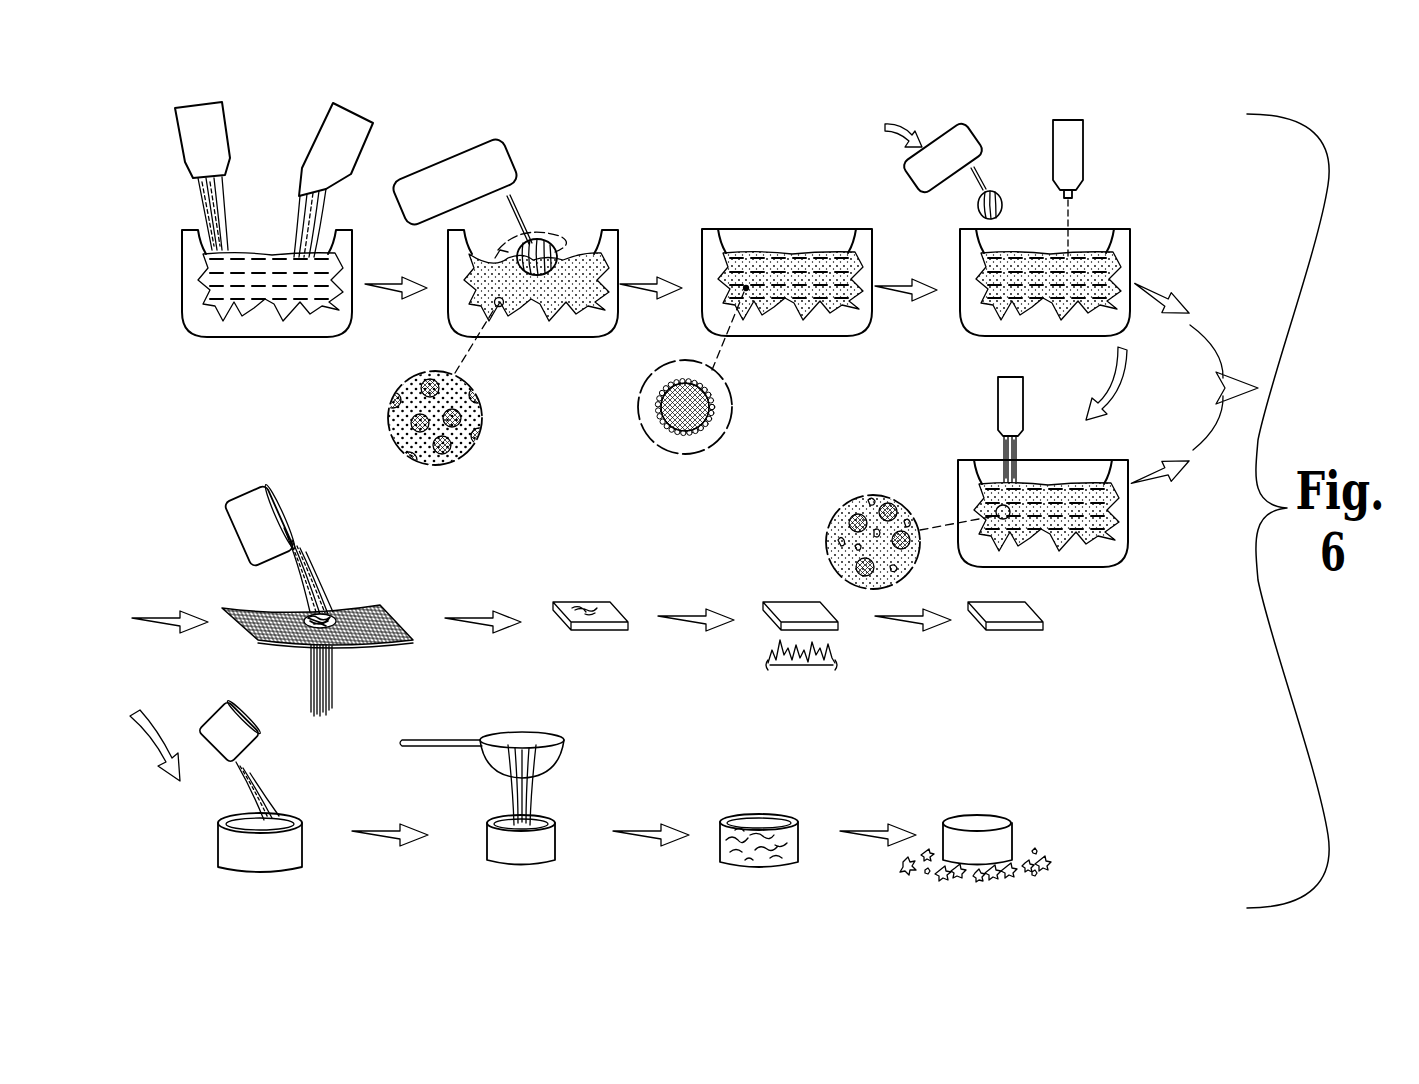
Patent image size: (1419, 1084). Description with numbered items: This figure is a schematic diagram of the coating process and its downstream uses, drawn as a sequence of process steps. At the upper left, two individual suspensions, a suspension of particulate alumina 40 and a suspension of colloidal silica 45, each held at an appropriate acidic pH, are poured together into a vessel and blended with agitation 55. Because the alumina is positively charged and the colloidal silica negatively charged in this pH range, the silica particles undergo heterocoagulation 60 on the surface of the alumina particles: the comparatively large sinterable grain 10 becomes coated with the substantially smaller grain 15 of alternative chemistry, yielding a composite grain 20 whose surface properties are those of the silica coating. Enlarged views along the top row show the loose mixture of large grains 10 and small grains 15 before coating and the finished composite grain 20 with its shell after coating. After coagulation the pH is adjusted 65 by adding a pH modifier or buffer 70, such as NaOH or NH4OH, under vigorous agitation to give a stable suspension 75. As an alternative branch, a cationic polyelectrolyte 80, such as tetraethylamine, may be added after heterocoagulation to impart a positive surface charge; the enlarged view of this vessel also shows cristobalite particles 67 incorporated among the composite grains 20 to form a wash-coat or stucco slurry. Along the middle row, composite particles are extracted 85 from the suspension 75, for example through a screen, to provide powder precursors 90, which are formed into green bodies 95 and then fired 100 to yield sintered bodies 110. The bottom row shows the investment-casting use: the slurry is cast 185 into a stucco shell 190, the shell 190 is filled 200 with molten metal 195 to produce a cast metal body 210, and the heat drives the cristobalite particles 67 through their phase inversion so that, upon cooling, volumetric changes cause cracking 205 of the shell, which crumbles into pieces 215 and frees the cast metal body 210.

The sinterable grain 10 is at (143, 208).
The smaller grain 15 is at (297, 203).
The composite grain 20 is at (660, 420).
The suspension of particulate alumina 40 is at (190, 147).
The suspension of colloidal silica 45 is at (327, 154).
The agitation 55 is at (520, 379).
The heterocoagulation 60 is at (777, 379).
The pH adjustment 65 is at (1040, 377).
The cristobalite particle 67 is at (845, 546).
The pH modifier or buffer 70 is at (1058, 157).
The stable suspension 75 is at (1033, 289).
The cationic polyelectrolyte 80 is at (1000, 414).
The extraction 85 is at (238, 684).
The powder precursor 90 is at (330, 615).
The green body 95 is at (570, 600).
The firing 100 is at (792, 699).
The sintered body 110 is at (997, 677).
The casting 185 is at (242, 909).
The stucco shell 190 is at (283, 818).
The molten metal 195 is at (525, 792).
The filling 200 is at (507, 909).
The cracking 205 is at (743, 907).
The cast metal body 210 is at (778, 820).
The pieces 215 is at (922, 862).